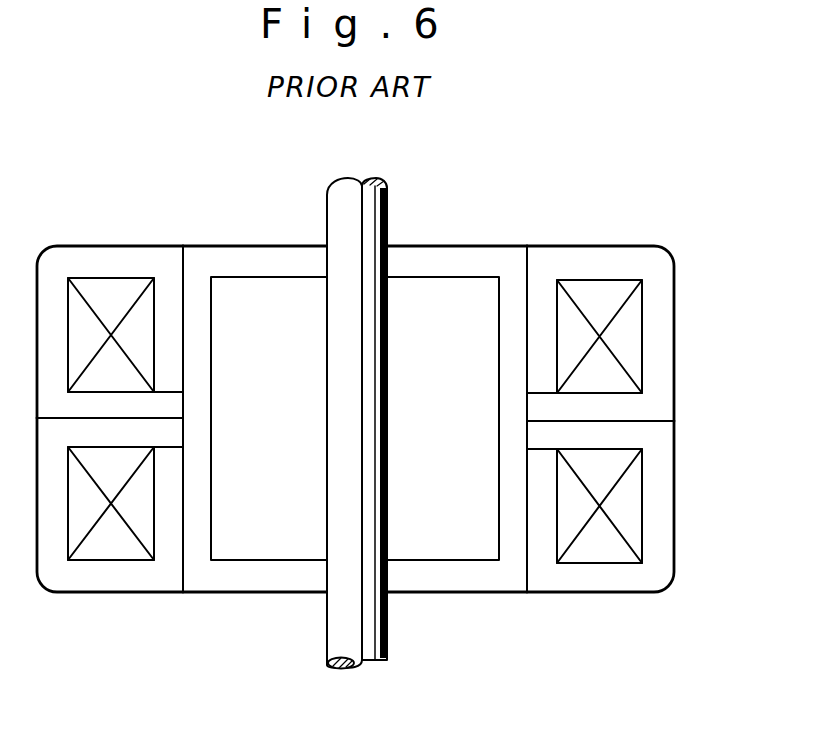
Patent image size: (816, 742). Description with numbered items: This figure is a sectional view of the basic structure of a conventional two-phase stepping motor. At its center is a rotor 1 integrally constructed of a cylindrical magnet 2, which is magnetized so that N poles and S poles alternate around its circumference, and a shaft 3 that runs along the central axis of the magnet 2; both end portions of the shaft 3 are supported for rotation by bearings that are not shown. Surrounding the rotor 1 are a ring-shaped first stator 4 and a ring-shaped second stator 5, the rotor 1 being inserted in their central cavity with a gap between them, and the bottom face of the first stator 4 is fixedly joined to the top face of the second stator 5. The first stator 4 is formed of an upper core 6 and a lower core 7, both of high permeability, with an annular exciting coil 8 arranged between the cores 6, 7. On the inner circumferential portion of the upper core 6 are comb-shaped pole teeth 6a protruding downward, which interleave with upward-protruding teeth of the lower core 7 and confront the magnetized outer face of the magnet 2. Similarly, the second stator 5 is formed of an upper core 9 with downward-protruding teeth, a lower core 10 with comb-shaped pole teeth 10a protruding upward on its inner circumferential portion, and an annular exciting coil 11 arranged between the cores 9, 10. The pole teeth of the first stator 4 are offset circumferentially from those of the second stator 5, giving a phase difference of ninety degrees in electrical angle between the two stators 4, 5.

The rotor 1 is at (355, 435).
The cylindrical magnet 2 is at (402, 543).
The shaft 3 is at (337, 648).
The first stator 4 is at (642, 339).
The second stator 5 is at (643, 506).
The upper core 6 is at (658, 324).
The pole teeth 6a is at (173, 323).
The lower core 7 is at (621, 412).
The annular exciting coil 8 is at (628, 357).
The upper core 9 is at (621, 456).
The lower core 10 is at (652, 557).
The pole teeth 10a is at (172, 513).
The annular exciting coil 11 is at (627, 514).